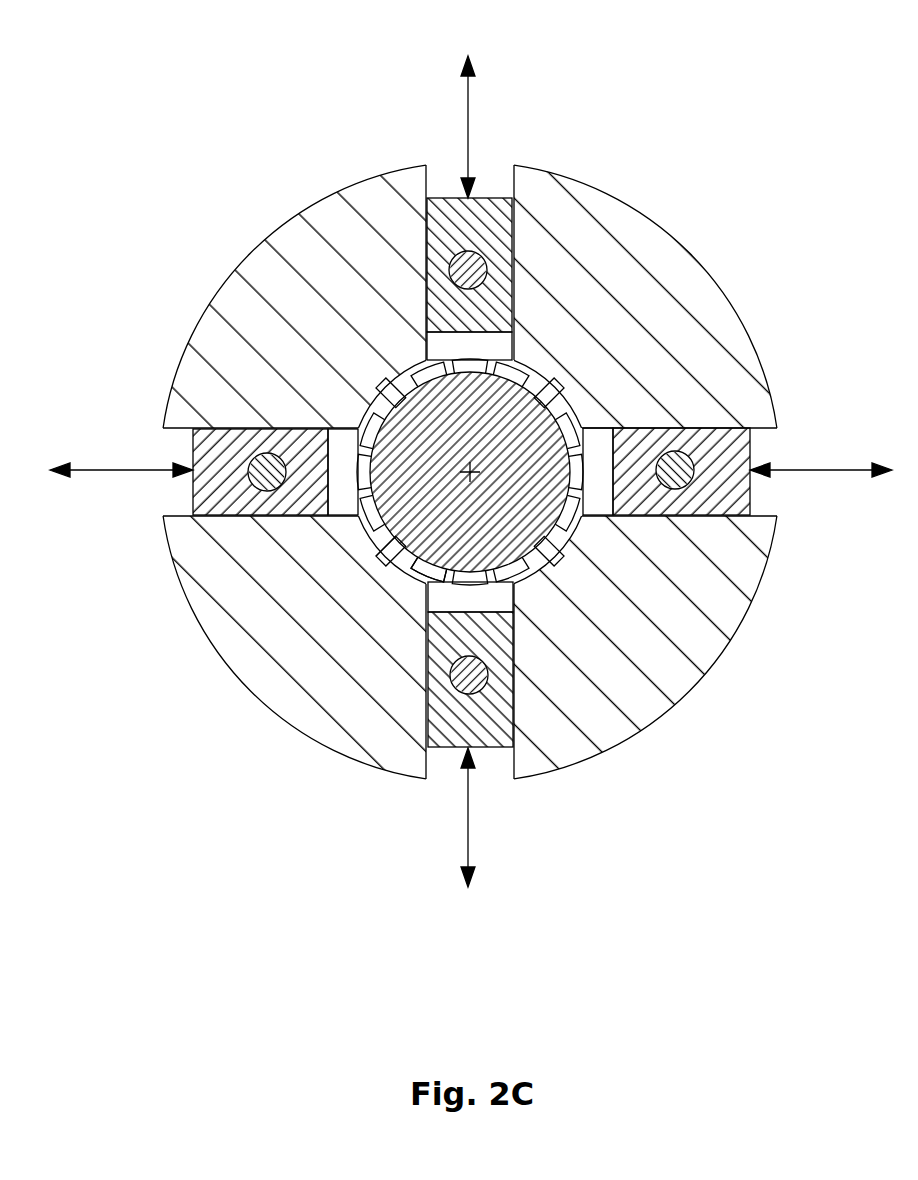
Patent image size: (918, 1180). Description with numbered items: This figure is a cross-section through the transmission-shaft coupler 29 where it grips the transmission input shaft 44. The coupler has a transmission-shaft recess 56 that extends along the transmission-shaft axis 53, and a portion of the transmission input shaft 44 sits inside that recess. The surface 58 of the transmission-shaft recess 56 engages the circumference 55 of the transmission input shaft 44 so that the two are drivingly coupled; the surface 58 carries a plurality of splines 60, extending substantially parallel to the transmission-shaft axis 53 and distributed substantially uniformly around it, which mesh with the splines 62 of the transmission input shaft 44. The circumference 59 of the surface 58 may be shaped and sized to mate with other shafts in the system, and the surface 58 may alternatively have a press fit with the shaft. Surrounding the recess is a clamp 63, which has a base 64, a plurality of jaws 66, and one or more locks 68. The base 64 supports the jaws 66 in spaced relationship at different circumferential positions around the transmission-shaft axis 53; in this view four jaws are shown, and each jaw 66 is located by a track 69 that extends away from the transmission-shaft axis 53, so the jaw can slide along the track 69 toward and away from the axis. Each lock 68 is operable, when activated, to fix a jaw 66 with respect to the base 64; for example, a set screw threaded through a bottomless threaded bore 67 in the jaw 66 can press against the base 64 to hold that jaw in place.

The transmission-shaft coupler 29 is at (222, 168).
The transmission input shaft 44 is at (520, 530).
The transmission-shaft axis 53 is at (540, 380).
The circumference of transmission input shaft 55 is at (405, 539).
The transmission-shaft recess 56 is at (418, 378).
The surface of transmission-shaft recess 58 is at (380, 530).
The circumference of surface 59 is at (570, 542).
The splines 60 is at (376, 405).
The splines of transmission input shaft 62 is at (592, 465).
The clamp 63 is at (688, 168).
The base 64 is at (703, 295).
The jaws 66 is at (470, 215).
The bottomless threaded bore 67 is at (514, 210).
The lock 68 is at (462, 250).
The track 69 is at (470, 268).